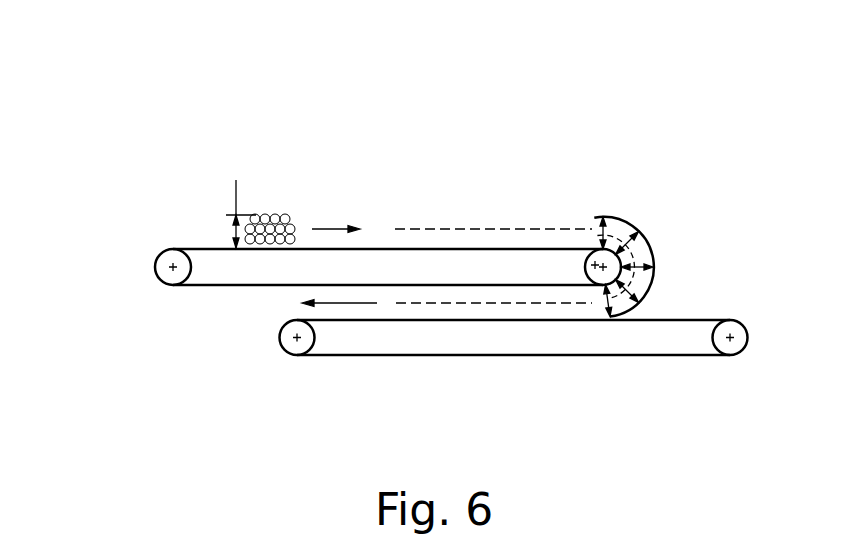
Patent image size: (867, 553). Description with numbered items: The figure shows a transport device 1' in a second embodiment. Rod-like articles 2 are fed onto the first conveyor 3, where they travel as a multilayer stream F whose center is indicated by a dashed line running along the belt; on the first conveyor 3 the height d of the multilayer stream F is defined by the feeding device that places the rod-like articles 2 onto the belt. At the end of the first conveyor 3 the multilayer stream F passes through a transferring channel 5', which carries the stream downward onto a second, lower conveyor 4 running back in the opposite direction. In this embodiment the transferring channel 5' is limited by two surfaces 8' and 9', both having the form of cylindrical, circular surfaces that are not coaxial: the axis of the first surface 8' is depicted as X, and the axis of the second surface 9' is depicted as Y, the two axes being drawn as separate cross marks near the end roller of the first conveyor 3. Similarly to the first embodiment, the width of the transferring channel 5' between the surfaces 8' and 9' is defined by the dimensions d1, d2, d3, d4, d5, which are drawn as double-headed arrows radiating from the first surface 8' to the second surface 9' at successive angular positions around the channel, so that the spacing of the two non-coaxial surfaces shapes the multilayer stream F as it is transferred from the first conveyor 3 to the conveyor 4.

The transport device 1' is at (449, 184).
The rod-like articles 2 is at (286, 214).
The first conveyor 3 is at (190, 250).
The lower conveyor belt 4 is at (735, 319).
The transferring channel 5' is at (689, 221).
The first surface 8' is at (558, 217).
The second surface 9' is at (620, 205).
The multilayer stream F is at (451, 229).
The height of the multilayer stream d is at (229, 211).
The dimension d1 is at (603, 216).
The dimension d2 is at (638, 232).
The dimension d3 is at (690, 267).
The dimension d4 is at (663, 323).
The dimension d5 is at (610, 317).
The axis of the first surface X is at (601, 268).
The axis of the second surface Y is at (594, 265).